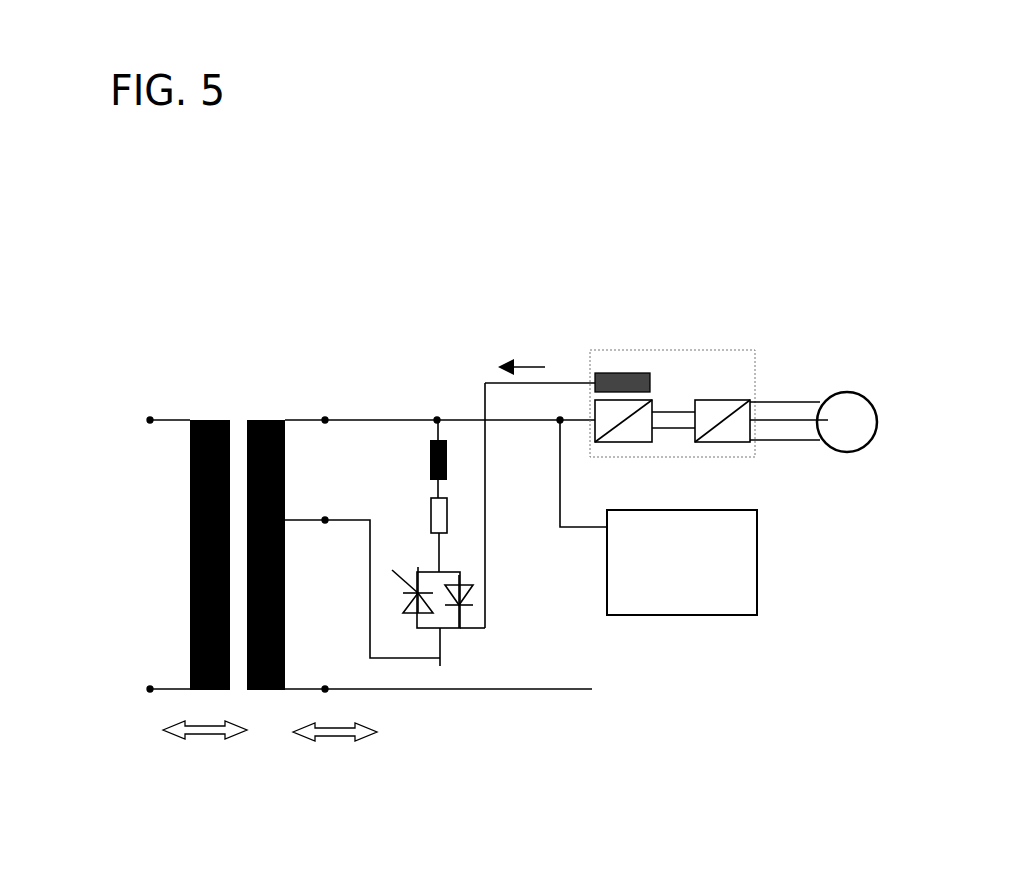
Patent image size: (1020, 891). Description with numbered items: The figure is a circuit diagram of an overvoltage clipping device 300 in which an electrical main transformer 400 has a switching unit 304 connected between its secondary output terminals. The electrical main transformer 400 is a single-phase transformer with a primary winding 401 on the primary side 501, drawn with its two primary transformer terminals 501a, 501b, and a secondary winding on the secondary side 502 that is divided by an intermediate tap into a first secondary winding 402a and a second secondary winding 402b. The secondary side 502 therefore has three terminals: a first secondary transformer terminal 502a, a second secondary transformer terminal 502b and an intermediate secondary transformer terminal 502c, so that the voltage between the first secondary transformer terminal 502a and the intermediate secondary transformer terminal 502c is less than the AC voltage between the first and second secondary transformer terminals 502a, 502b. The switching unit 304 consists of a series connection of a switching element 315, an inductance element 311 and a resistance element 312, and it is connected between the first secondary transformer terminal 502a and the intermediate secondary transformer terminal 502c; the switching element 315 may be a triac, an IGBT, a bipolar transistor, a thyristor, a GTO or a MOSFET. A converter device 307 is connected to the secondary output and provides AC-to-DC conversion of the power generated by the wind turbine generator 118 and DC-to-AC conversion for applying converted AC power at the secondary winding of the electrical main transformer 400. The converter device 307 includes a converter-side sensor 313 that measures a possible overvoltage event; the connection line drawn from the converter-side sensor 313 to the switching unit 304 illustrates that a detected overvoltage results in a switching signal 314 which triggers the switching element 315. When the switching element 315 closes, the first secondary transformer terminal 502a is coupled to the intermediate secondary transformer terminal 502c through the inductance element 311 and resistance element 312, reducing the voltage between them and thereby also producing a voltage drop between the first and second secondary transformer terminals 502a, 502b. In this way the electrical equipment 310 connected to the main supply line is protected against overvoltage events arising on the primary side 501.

The overvoltage clipping device 300 is at (693, 76).
The electrical main transformer 400 is at (254, 451).
The primary winding 401 is at (222, 427).
The first secondary winding 402a is at (286, 472).
The second secondary winding 402b is at (286, 593).
The primary terminal 501a is at (150, 420).
The primary terminal 501b is at (153, 688).
The first secondary transformer terminal 502a is at (325, 420).
The second secondary transformer terminal 502b is at (325, 690).
The intermediate secondary transformer terminal 502c is at (325, 520).
The primary side 501 is at (217, 732).
The secondary side 502 is at (330, 732).
The switching unit 304 is at (465, 665).
The inductance element 311 is at (447, 455).
The resistance element 312 is at (448, 530).
The switching element 315 is at (462, 607).
The switching signal 314 is at (527, 362).
The converter-side sensor 313 is at (623, 373).
The converter device 307 is at (652, 352).
The electrical equipment 310 is at (693, 605).
The wind turbine generator 118 is at (846, 438).